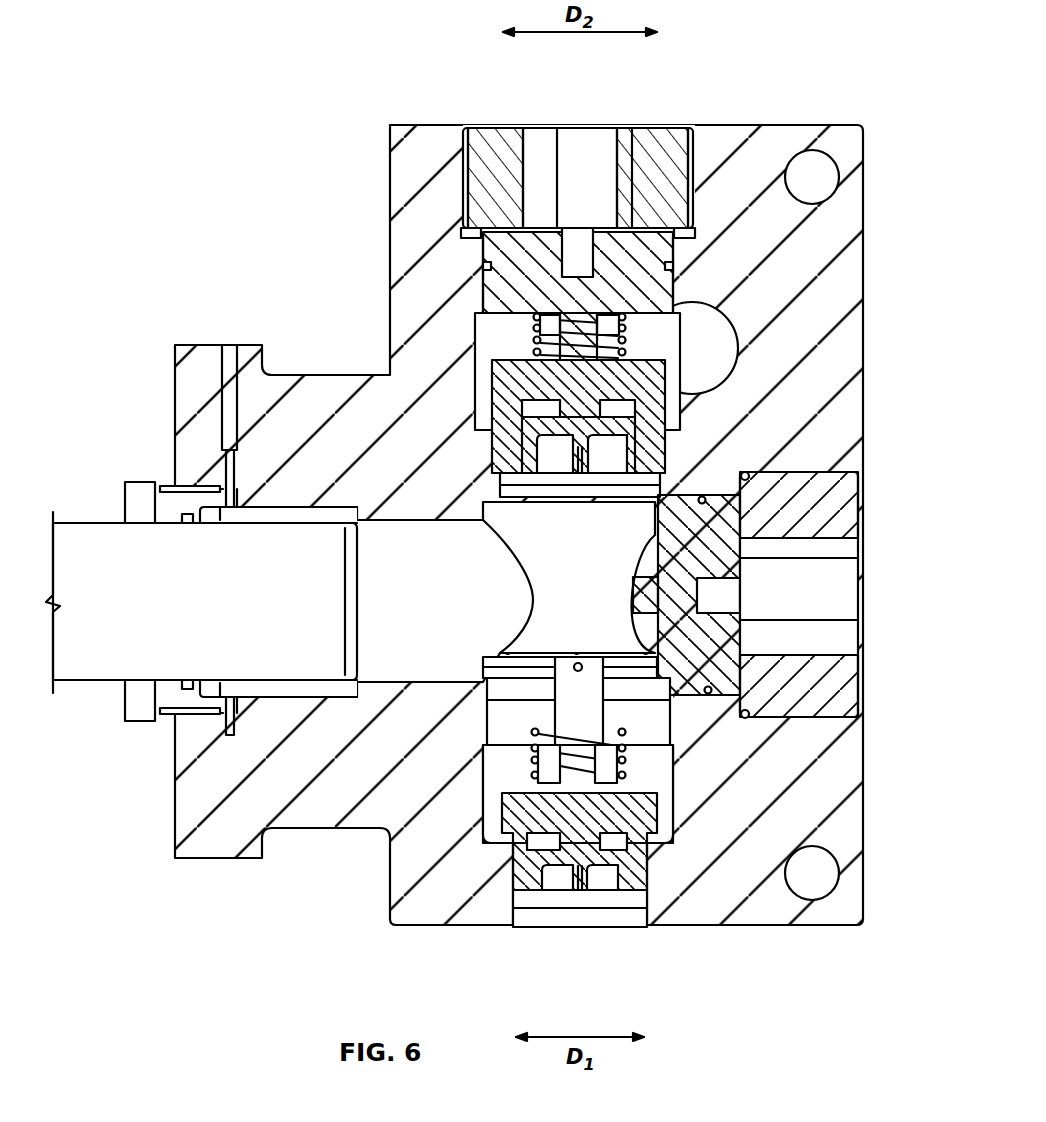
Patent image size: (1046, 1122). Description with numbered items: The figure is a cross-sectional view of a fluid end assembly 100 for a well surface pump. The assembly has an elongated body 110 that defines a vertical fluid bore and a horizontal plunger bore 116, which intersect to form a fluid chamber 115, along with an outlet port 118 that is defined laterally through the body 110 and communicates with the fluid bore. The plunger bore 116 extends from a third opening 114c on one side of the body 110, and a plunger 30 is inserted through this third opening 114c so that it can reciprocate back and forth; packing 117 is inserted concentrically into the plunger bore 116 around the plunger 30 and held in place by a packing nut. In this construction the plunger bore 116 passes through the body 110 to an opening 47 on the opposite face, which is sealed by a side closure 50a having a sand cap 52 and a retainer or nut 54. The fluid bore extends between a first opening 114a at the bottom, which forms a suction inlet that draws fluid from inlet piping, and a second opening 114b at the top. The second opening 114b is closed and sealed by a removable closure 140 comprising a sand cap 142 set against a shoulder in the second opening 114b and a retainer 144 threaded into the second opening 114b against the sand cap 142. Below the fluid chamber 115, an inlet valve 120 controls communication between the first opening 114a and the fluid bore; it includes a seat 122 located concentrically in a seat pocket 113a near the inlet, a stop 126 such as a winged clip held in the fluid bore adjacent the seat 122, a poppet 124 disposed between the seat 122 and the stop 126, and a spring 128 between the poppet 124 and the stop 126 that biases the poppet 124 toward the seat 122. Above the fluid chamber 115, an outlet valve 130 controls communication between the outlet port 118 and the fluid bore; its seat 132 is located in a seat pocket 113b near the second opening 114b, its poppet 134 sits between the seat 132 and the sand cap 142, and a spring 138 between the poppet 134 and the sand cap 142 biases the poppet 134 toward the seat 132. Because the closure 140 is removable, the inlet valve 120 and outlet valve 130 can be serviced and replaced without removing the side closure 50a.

The fluid end assembly 100 is at (504, 520).
The body 110 is at (390, 185).
The plunger 30 is at (84, 684).
The packing 117 is at (157, 735).
The third opening 114c is at (290, 694).
The plunger bore 116 is at (423, 684).
The fluid chamber 115 is at (597, 567).
The outlet port 118 is at (720, 324).
The second opening 114b is at (688, 125).
The first opening 114a is at (628, 924).
The closure 140 is at (578, 150).
The sand cap 142 is at (603, 220).
The retainer 144 is at (668, 127).
The outlet valve 130 is at (679, 279).
The spring 138 is at (530, 344).
The poppet 134 is at (492, 378).
The seat 132 is at (522, 444).
The seat pocket 113b is at (664, 447).
The seat pocket 113a is at (520, 926).
The inlet valve 120 is at (688, 818).
The seat 122 is at (648, 872).
The poppet 124 is at (673, 805).
The stop 126 is at (670, 727).
The spring 128 is at (640, 762).
The sand cap 52 is at (740, 597).
The side closure 50a is at (851, 600).
The retainer 54 is at (862, 697).
The opening 47 is at (860, 706).